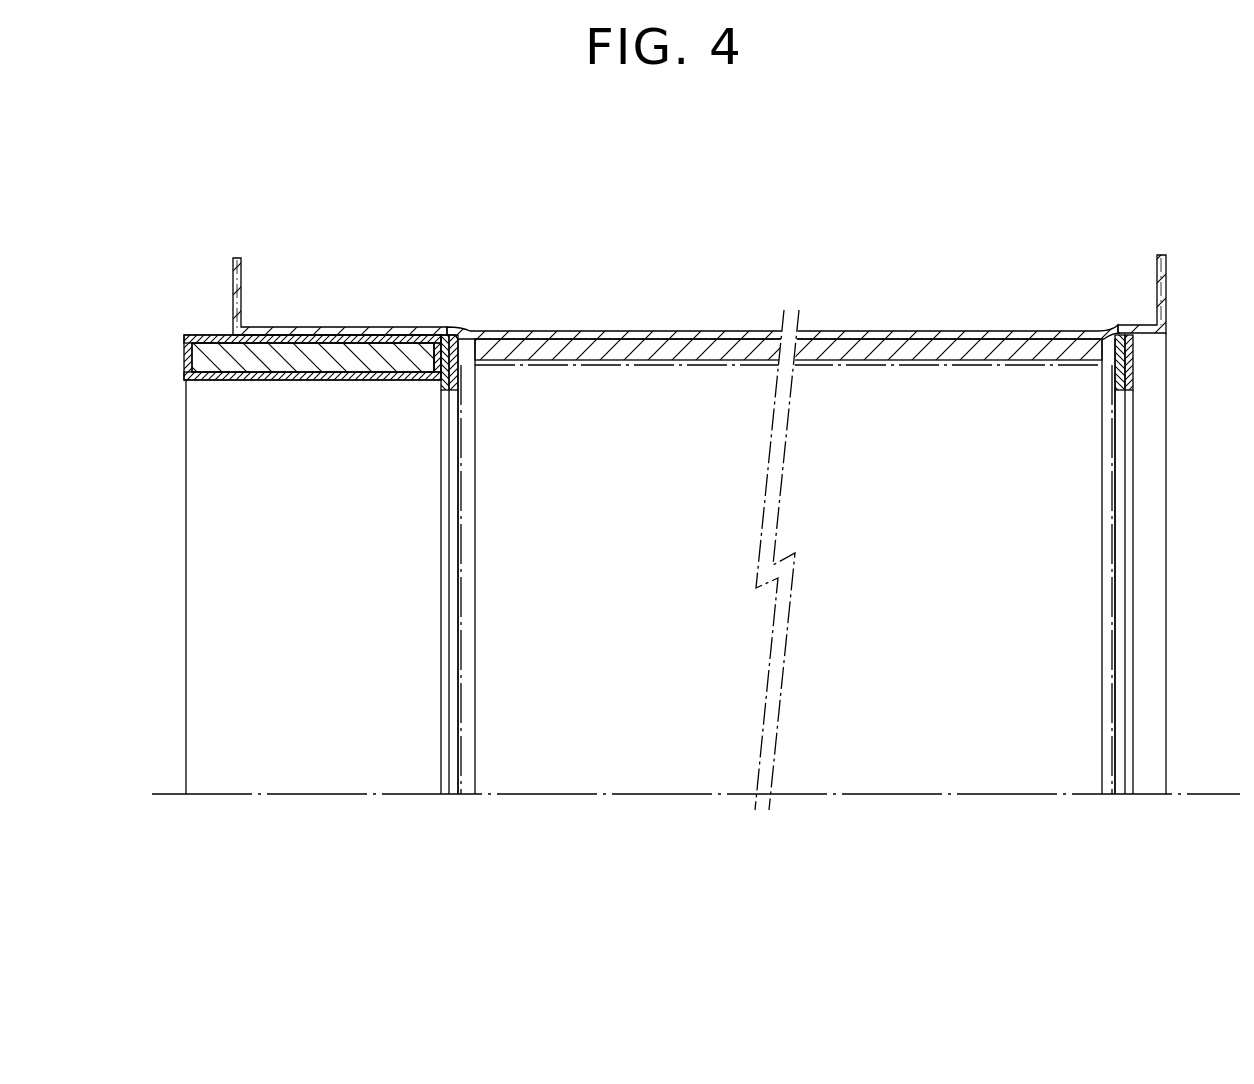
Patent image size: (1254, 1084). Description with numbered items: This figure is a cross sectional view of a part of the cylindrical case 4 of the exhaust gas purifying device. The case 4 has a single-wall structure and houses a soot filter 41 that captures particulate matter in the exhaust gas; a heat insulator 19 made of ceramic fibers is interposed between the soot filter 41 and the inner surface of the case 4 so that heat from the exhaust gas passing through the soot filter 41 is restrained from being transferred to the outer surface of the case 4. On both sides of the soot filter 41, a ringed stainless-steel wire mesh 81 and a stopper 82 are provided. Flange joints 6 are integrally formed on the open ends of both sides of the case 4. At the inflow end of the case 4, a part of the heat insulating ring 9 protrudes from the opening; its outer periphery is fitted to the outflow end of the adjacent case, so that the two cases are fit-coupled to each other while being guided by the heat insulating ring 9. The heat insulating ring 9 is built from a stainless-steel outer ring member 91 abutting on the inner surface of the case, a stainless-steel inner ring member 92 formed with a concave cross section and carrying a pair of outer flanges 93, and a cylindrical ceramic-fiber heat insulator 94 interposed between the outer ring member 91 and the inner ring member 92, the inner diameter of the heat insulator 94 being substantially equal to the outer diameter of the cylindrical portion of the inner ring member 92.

The case 4 is at (657, 330).
The flange joint 6 is at (238, 257).
The heat insulating ring 9 is at (326, 381).
The heat insulator 19 is at (939, 338).
The soot filter 41 is at (1113, 660).
The stainless-steel wire mesh 81 is at (455, 335).
The stopper 82 is at (446, 335).
The outer ring member 91 is at (205, 335).
The inner ring member 92 is at (240, 381).
The outer flange 93 is at (420, 346).
The heat insulator 94 is at (336, 348).